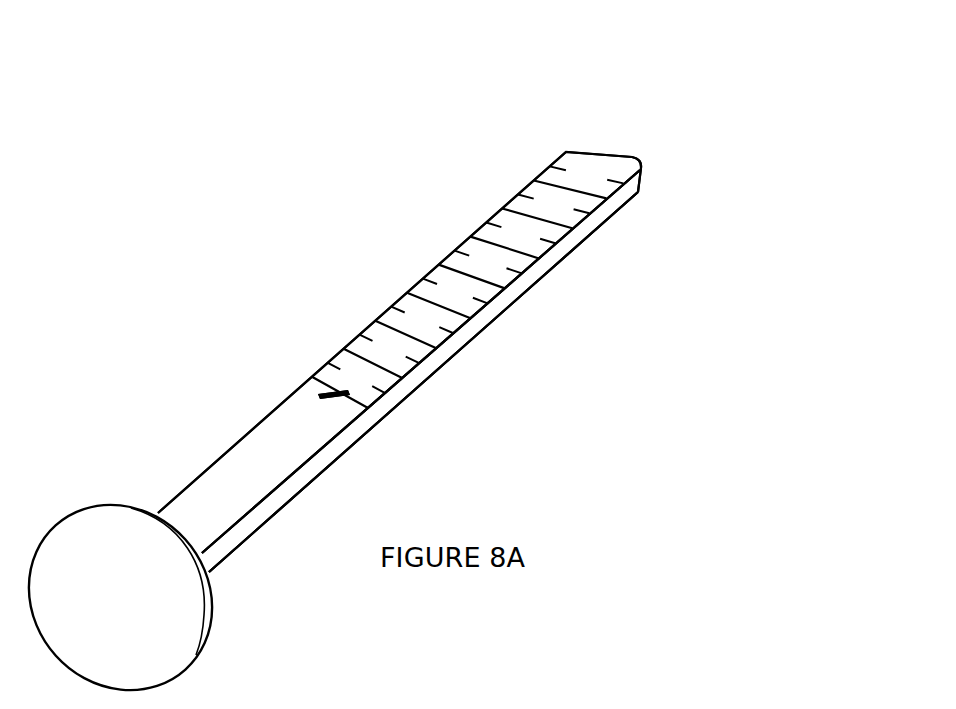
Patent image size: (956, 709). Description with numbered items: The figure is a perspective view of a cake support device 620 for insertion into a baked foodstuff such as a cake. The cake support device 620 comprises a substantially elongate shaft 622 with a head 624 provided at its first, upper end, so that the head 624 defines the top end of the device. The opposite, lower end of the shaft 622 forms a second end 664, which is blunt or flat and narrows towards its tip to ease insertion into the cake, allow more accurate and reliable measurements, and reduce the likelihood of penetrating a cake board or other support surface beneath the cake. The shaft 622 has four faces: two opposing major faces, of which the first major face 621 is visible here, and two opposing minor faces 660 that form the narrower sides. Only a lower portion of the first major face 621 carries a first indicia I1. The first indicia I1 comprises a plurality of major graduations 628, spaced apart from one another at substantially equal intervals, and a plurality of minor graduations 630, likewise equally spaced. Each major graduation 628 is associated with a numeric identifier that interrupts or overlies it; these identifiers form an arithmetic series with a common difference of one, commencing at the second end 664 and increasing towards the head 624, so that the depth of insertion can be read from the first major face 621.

The cake support device 620 is at (177, 315).
The first major face 621 is at (283, 457).
The shaft 622 is at (447, 323).
The head 624 is at (163, 662).
The major graduations 628 is at (520, 299).
The minor graduations 630 is at (502, 214).
The minor faces 660 is at (410, 395).
The second end 664 is at (610, 155).
The first indicia I1 is at (347, 347).